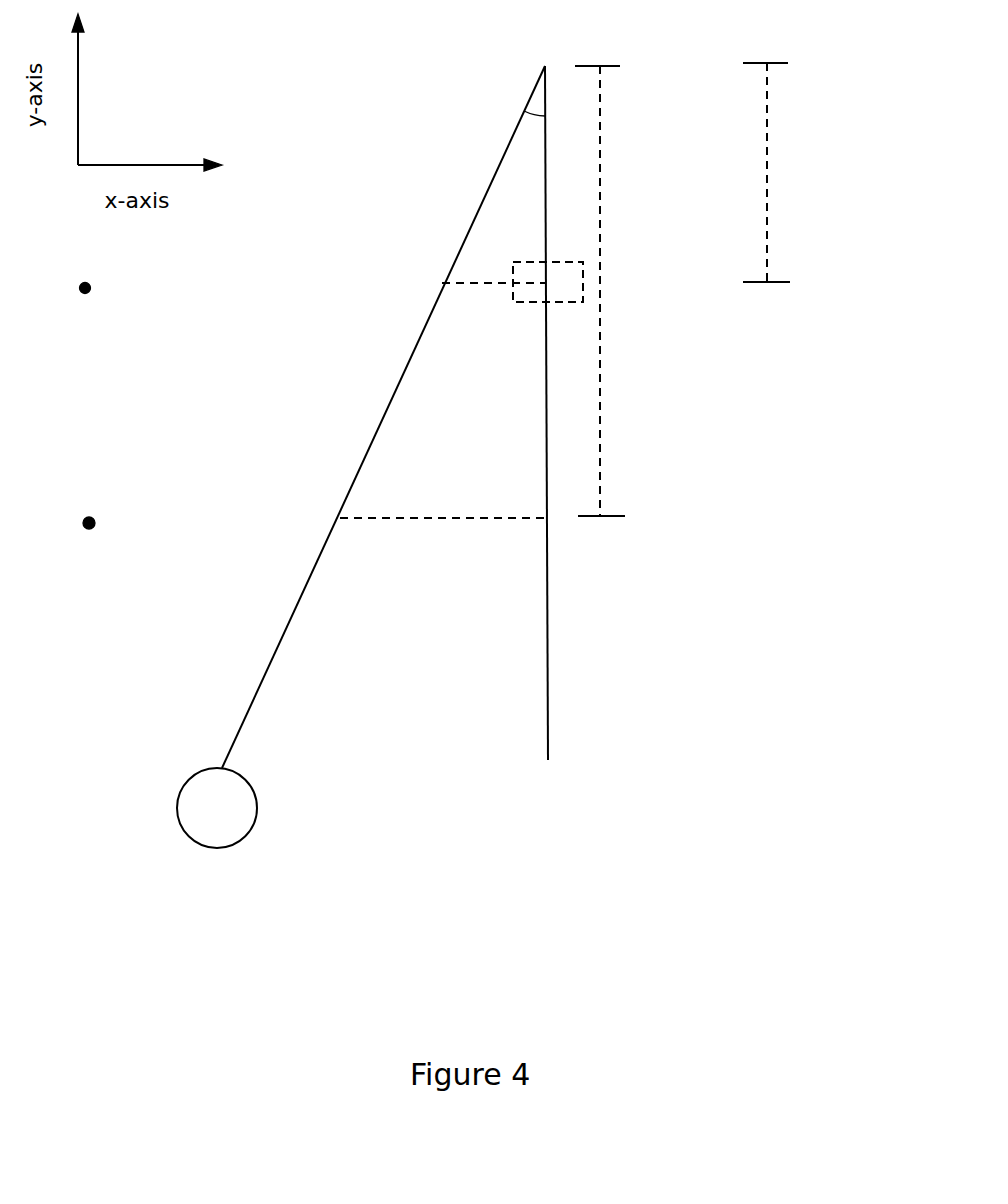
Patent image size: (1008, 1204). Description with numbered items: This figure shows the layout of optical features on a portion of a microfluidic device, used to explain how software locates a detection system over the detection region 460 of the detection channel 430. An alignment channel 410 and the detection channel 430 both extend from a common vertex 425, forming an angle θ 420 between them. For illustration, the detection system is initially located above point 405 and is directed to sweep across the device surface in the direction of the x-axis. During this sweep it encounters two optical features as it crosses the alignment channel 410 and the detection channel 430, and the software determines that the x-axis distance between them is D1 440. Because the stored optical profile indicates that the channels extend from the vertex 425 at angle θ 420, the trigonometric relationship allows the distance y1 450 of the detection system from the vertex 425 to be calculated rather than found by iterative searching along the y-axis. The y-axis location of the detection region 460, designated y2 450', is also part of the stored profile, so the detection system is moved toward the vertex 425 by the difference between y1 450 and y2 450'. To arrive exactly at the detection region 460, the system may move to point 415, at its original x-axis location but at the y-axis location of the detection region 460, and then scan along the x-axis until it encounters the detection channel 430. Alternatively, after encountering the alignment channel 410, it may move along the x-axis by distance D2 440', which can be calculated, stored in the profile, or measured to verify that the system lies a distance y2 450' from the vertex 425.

The point 405 is at (92, 512).
The alignment channel 410 is at (420, 328).
The point 415 is at (85, 278).
The angle θ 420 is at (540, 174).
The vertex 425 is at (545, 60).
The detection channel 430 is at (548, 340).
The distance D1 440 is at (443, 481).
The distance D2 440' is at (486, 226).
The distance y1 450 is at (644, 291).
The distance y2 450' is at (811, 172).
The detection region 460 is at (583, 268).